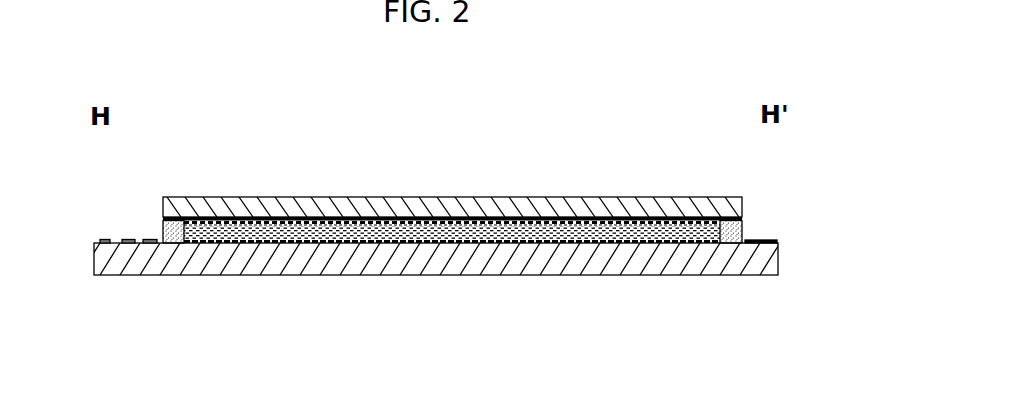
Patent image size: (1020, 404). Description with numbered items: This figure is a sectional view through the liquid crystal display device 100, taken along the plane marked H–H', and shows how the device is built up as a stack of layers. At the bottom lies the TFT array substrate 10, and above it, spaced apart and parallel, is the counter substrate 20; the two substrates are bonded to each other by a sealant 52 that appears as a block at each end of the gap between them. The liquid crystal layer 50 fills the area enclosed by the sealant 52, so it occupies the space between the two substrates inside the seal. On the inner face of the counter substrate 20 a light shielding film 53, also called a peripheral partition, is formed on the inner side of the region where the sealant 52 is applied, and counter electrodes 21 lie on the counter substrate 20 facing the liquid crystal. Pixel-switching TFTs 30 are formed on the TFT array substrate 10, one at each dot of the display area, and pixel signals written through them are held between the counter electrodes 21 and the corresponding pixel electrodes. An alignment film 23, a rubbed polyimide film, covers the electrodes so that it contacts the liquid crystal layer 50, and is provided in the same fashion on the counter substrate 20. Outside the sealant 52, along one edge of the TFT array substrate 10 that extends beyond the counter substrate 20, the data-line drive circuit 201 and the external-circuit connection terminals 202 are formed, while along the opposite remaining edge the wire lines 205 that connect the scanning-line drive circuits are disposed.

The liquid crystal display device 100 is at (615, 115).
The TFT array substrate 10 is at (638, 271).
The counter substrate 20 is at (568, 207).
The counter electrodes 21 is at (340, 221).
The alignment film 23 is at (436, 224).
The pixel-switching TFT 30 is at (445, 244).
The liquid crystal layer 50 is at (552, 231).
The sealant 52 is at (742, 229).
The light shielding film 53 is at (203, 217).
The data-line drive circuit 201 is at (147, 239).
The external-circuit connection terminals 202 is at (104, 239).
The wire lines 205 is at (763, 247).